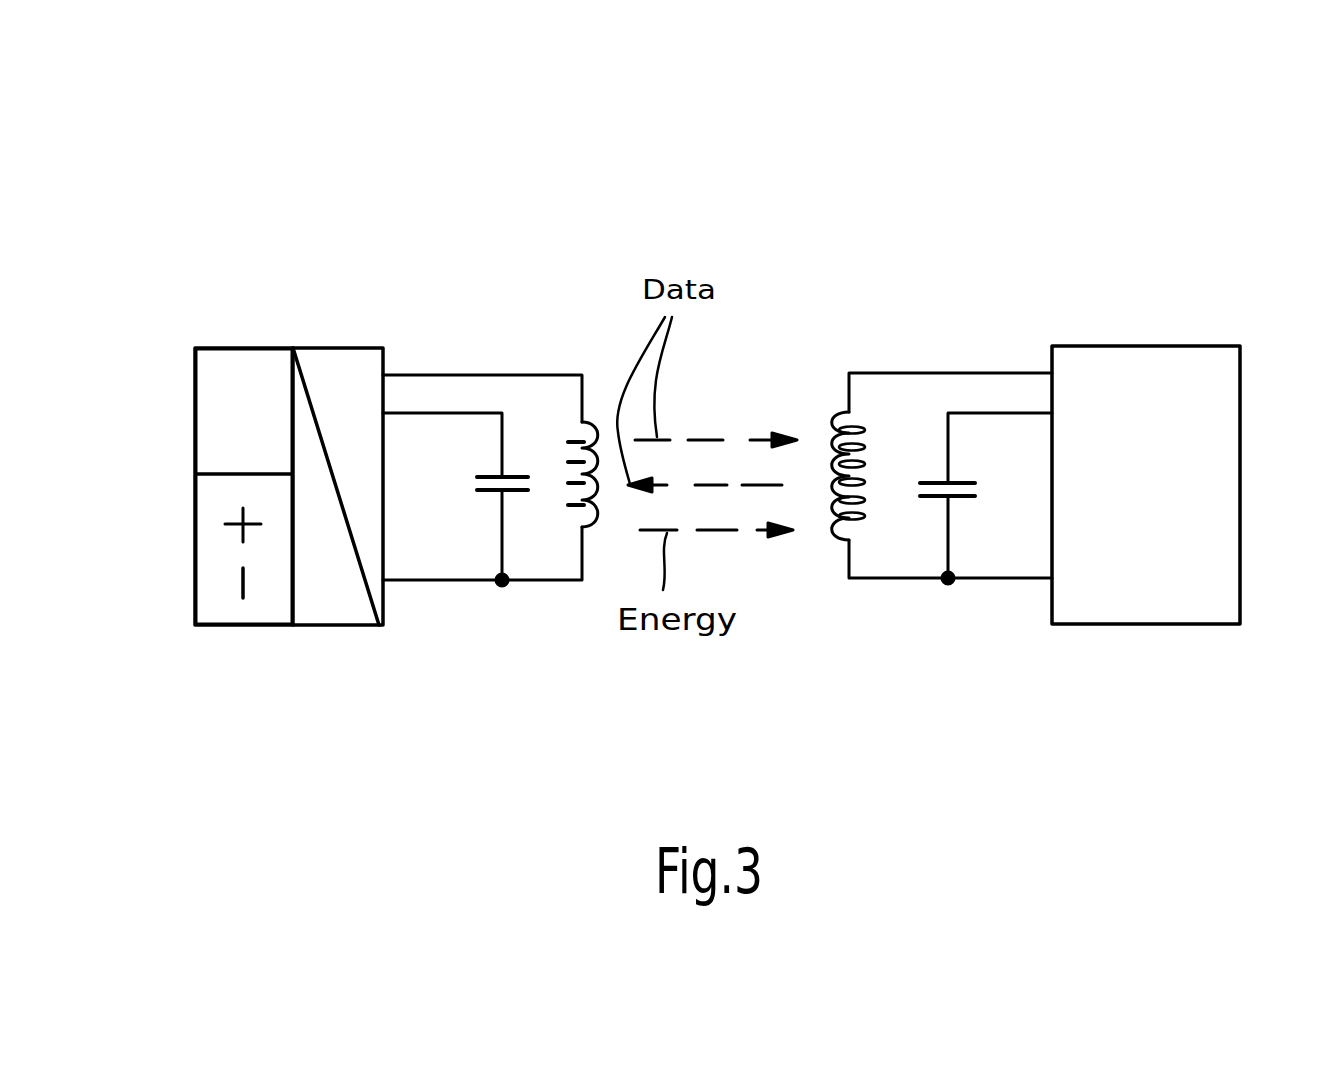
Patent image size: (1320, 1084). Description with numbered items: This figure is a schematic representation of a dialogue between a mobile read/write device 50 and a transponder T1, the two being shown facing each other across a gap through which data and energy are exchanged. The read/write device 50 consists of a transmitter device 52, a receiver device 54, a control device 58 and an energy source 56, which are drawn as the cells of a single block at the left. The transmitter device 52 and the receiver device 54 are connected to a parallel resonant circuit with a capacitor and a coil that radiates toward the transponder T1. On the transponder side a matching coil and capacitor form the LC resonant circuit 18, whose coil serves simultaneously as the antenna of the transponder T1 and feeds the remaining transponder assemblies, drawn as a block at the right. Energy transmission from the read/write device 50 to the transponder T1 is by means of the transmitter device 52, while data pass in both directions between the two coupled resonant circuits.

The LC resonant circuit 18 is at (920, 326).
The read/write device 50 is at (258, 712).
The transmitter device 52 is at (355, 373).
The receiver device 54 is at (348, 600).
The energy source 56 is at (222, 597).
The control device 58 is at (241, 373).
The transponder T1 is at (1162, 240).